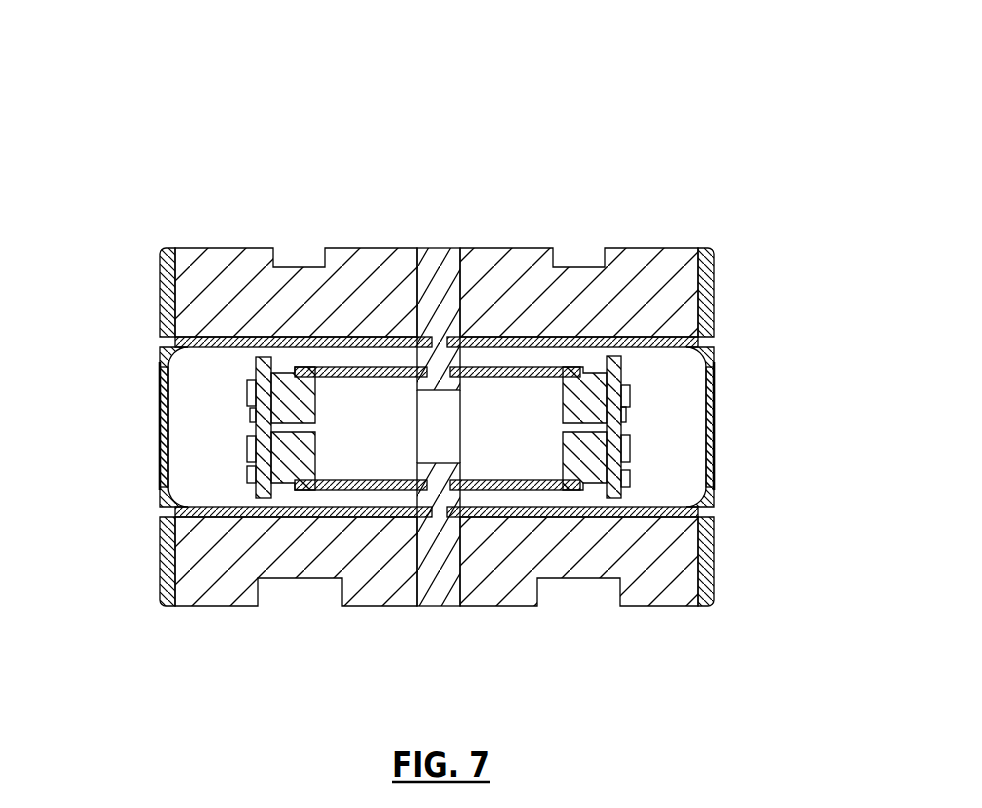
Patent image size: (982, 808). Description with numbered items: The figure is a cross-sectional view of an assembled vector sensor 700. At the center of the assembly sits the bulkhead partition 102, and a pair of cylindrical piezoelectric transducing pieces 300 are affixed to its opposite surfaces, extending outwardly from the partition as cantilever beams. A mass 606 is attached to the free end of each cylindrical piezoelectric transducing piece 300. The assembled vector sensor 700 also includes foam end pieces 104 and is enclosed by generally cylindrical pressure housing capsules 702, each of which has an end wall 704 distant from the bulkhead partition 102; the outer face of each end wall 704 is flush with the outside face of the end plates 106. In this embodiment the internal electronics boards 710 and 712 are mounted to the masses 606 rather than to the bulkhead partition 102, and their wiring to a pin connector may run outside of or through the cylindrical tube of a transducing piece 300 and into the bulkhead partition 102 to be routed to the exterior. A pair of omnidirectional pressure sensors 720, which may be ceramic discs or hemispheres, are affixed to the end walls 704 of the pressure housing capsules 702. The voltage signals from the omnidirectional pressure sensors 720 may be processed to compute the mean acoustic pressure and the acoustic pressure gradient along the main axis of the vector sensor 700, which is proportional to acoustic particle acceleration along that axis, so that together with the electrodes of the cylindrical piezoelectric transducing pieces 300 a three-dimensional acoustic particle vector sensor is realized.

The assembled vector sensor 700 is at (597, 98).
The bulkhead partition 102 is at (440, 270).
The foam end pieces 104 is at (240, 264).
The end plates 106 is at (163, 547).
The cylindrical piezoelectric transducing pieces 300 is at (388, 465).
The mass 606 is at (586, 400).
The pressure housing capsules 702 is at (222, 340).
The end wall 704 is at (162, 368).
The internal electronics board 710 is at (261, 363).
The internal electronics board 712 is at (616, 397).
The omnidirectional pressure sensors 720 is at (162, 460).